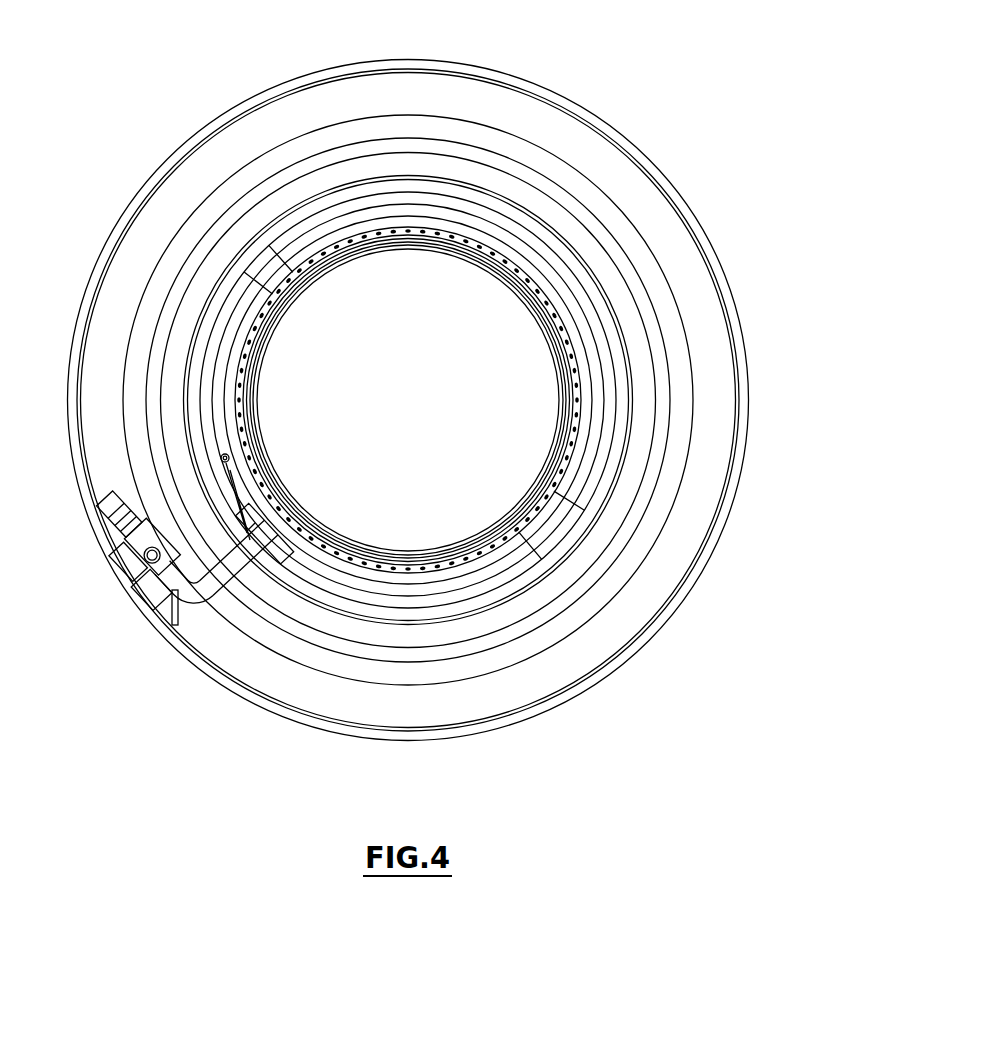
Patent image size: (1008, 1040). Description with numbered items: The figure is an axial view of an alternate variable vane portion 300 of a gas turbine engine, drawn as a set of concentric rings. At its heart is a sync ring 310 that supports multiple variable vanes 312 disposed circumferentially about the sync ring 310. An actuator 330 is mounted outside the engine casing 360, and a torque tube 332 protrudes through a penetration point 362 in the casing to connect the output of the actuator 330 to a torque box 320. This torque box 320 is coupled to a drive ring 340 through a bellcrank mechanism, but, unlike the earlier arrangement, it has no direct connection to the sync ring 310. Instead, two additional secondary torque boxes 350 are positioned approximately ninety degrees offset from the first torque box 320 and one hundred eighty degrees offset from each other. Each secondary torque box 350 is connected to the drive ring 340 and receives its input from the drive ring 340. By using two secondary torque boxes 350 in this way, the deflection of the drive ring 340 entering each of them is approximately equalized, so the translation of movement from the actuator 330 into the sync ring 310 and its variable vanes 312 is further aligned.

The vane portion 300 is at (738, 107).
The sync ring 310 is at (412, 230).
The variable vanes 312 is at (351, 237).
The torque box 320 is at (285, 553).
The actuator 330 is at (137, 614).
The torque tube 332 is at (268, 585).
The drive ring 340 is at (608, 422).
The secondary torque boxes 350 is at (265, 280).
The engine casing 360 is at (300, 163).
The penetration point 362 is at (221, 578).